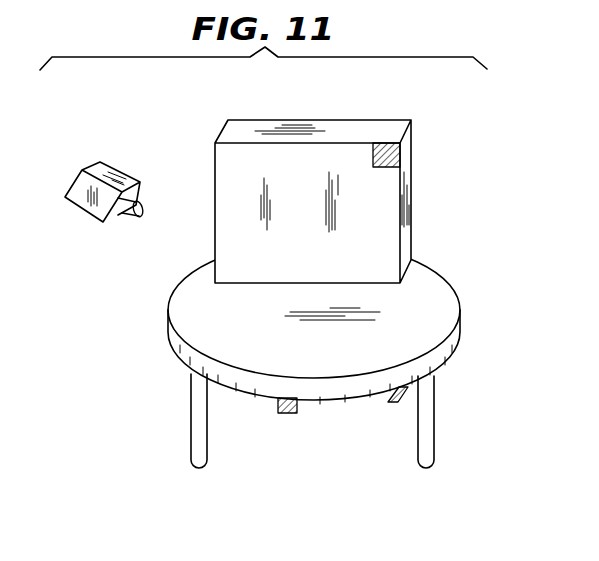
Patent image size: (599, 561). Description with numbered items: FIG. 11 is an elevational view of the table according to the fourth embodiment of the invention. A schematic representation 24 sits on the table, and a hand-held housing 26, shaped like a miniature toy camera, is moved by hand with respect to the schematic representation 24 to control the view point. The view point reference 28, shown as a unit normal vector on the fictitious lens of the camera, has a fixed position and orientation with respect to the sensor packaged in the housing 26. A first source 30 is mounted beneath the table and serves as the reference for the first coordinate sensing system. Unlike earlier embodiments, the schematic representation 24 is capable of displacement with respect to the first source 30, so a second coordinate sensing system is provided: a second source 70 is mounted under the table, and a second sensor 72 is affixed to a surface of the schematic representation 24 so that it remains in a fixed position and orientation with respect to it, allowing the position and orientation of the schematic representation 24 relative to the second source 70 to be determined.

The schematic representation 24 is at (303, 152).
The housing 26 is at (95, 165).
The view point reference 28 is at (141, 217).
The first source 30 is at (292, 413).
The second source 70 is at (396, 403).
The second sensor 72 is at (400, 156).